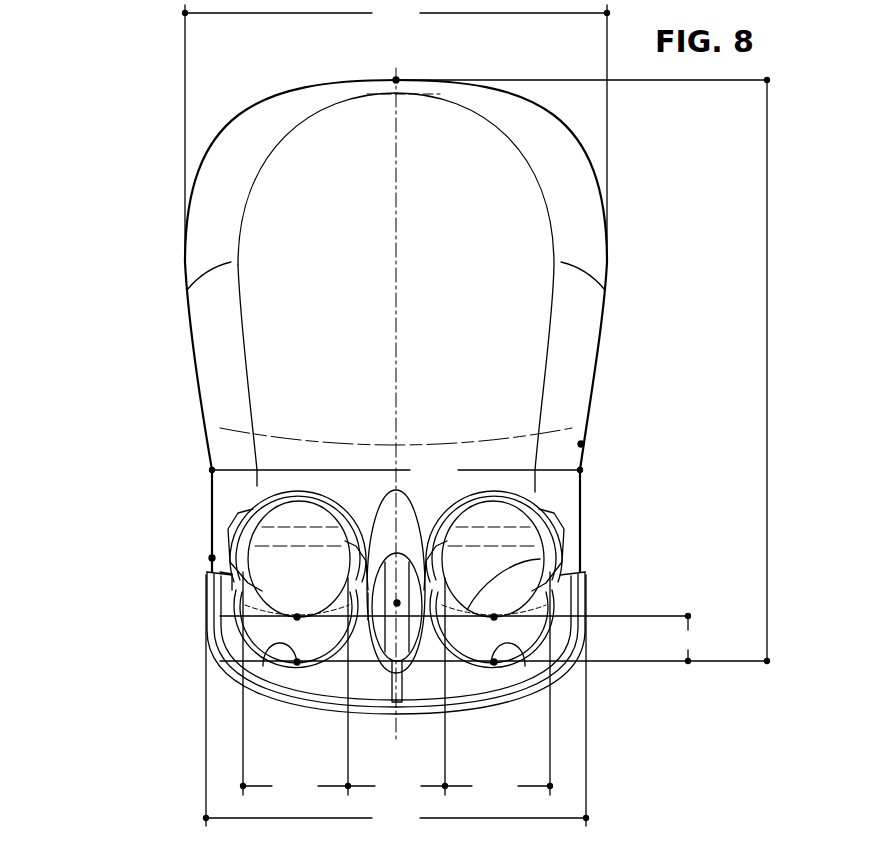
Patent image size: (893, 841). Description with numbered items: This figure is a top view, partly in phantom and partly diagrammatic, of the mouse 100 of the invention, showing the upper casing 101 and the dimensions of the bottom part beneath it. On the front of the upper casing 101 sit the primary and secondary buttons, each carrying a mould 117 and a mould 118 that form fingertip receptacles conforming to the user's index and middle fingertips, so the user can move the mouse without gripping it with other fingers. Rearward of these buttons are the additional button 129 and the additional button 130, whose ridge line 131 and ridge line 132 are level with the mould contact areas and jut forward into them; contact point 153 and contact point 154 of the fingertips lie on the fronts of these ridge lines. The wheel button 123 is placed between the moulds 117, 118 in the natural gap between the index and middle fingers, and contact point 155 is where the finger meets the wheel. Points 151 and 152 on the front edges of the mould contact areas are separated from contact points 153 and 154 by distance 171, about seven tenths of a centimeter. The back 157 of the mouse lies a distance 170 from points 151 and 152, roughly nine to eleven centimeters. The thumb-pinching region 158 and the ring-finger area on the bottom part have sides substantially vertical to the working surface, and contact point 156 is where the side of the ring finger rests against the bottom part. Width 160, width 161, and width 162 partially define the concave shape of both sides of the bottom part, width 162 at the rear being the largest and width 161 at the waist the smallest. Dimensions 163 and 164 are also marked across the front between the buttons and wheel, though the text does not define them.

The mouse 100 is at (185, 433).
The upper casing 101 is at (285, 366).
The mould 117 is at (520, 667).
The mould 118 is at (267, 673).
The wheel button 123 is at (393, 702).
The additional button 129 is at (545, 540).
The additional button 130 is at (280, 555).
The ridge line 131 is at (540, 559).
The ridge line 132 is at (268, 606).
The front edge point 151 is at (558, 672).
The front edge point 152 is at (285, 665).
The contact point 153 is at (556, 600).
The contact point 154 is at (292, 617).
The contact point 155 is at (368, 593).
The contact point 156 is at (212, 558).
The back 157 is at (396, 78).
The thumb-pinching region 158 is at (581, 444).
The width 160 is at (376, 828).
The width 161 is at (414, 479).
The width 162 is at (376, 23).
The center spacing dimension 163 is at (378, 796).
The side spacing dimension 164 is at (275, 796).
The distance 170 is at (745, 385).
The distance 171 is at (668, 650).